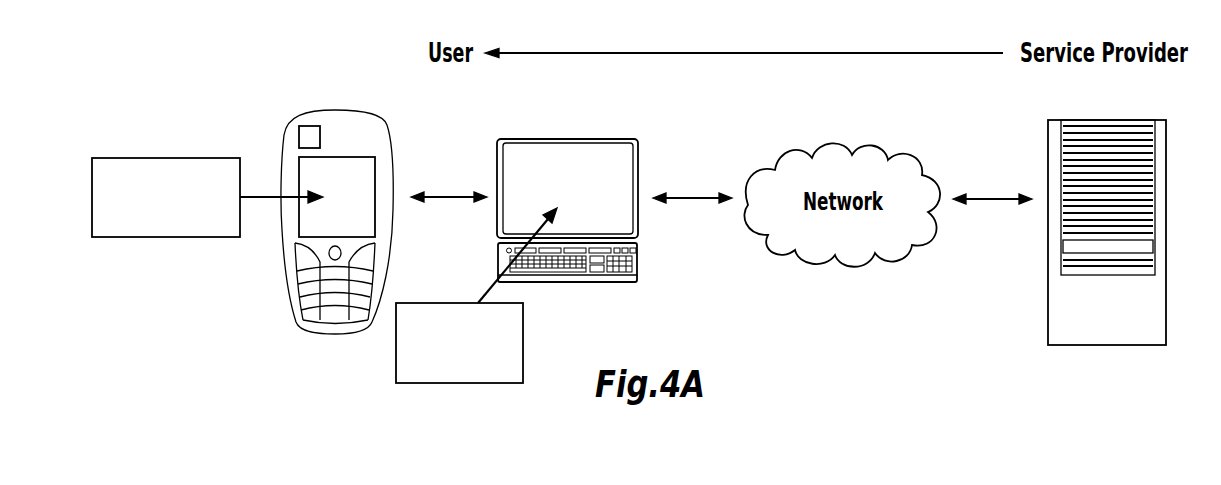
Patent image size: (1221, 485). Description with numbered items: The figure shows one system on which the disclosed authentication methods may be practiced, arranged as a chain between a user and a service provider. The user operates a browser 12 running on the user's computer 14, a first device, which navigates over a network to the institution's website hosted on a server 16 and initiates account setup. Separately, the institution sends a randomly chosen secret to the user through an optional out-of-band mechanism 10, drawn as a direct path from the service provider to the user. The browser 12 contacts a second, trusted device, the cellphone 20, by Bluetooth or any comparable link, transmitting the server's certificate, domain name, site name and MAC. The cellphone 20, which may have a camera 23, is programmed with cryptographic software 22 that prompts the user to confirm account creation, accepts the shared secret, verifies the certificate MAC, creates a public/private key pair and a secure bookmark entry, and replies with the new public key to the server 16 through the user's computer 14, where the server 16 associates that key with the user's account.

The out-of-band mechanism 10 is at (744, 39).
The browser 12 is at (476, 295).
The user's computer 14 is at (535, 139).
The server 16 is at (1107, 213).
The cellphone 20 is at (291, 102).
The cryptographic software 22 is at (207, 197).
The camera 23 is at (298, 135).